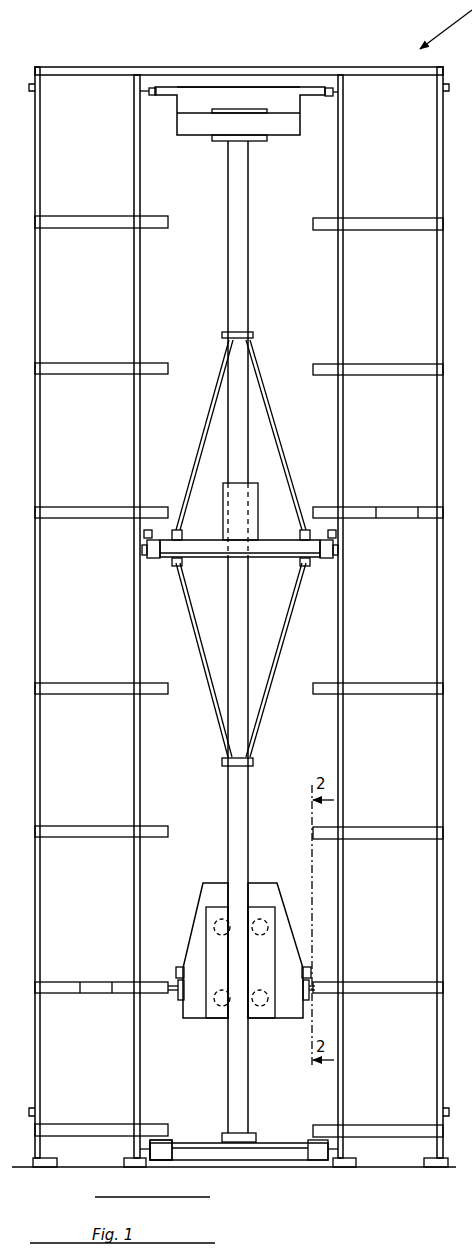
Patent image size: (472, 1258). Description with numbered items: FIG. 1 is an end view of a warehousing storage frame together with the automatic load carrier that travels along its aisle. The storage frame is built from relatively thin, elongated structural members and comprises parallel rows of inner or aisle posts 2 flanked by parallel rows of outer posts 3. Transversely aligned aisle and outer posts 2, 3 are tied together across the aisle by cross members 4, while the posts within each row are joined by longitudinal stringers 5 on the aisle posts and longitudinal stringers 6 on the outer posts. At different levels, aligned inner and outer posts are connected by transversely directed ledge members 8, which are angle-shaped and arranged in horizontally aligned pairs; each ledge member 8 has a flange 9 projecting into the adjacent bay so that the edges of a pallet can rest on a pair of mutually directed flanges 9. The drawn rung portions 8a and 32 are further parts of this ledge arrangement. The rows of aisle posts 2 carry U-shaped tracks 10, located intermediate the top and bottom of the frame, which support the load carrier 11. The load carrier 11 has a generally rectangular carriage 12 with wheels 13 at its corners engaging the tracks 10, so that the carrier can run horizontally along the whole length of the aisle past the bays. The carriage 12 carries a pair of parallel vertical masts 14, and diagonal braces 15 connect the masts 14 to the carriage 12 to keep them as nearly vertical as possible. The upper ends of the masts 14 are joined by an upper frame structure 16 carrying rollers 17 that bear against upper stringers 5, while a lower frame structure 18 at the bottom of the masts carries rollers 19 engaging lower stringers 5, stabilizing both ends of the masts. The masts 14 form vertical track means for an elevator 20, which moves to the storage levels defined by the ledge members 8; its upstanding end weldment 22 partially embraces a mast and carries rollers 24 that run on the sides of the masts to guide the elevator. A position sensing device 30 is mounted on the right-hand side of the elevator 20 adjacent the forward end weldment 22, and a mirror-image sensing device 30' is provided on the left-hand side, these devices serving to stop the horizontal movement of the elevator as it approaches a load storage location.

The inner or aisle posts 2 is at (238, 616).
The outer posts 3 is at (41, 768).
The cross members 4 is at (275, 71).
The longitudinal stringers 5 is at (150, 88).
The longitudinal stringers 6 is at (29, 88).
The ledge member 8 is at (105, 982).
The rung end portion 8a is at (112, 993).
The flange 9 is at (80, 993).
The U-shaped tracks 10 is at (154, 562).
The load carrier 11 is at (282, 360).
The carriage 12 is at (265, 545).
The wheels 13 is at (149, 528).
The masts 14 is at (249, 258).
The diagonal braces 15 is at (286, 446).
The upper frame structure 16 is at (200, 128).
The rollers 17 is at (174, 88).
The lower frame structure 18 is at (282, 1142).
The rollers 19 is at (160, 1146).
The elevator 20 is at (203, 896).
The end weldment 22 is at (141, 318).
The rollers 24 is at (262, 919).
The position sensing device 30 is at (321, 958).
The position sensing device 30' is at (172, 956).
The cross rung 32 is at (392, 687).